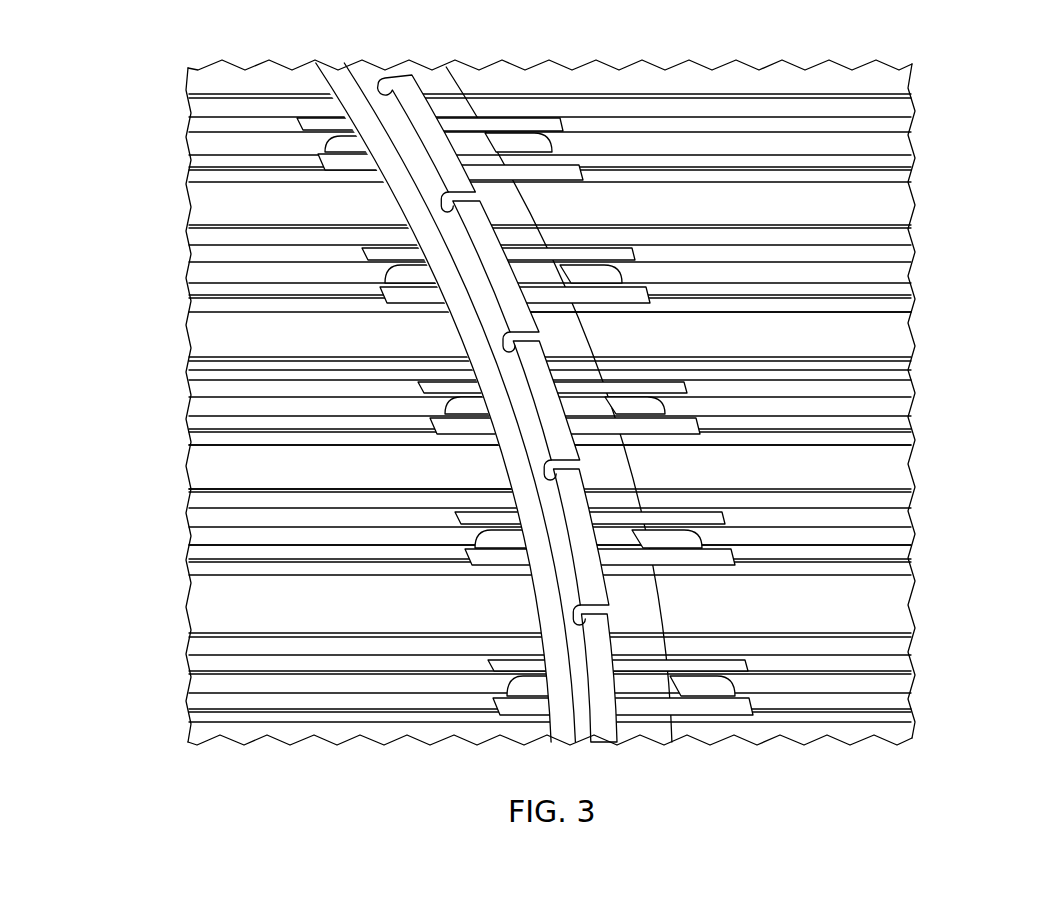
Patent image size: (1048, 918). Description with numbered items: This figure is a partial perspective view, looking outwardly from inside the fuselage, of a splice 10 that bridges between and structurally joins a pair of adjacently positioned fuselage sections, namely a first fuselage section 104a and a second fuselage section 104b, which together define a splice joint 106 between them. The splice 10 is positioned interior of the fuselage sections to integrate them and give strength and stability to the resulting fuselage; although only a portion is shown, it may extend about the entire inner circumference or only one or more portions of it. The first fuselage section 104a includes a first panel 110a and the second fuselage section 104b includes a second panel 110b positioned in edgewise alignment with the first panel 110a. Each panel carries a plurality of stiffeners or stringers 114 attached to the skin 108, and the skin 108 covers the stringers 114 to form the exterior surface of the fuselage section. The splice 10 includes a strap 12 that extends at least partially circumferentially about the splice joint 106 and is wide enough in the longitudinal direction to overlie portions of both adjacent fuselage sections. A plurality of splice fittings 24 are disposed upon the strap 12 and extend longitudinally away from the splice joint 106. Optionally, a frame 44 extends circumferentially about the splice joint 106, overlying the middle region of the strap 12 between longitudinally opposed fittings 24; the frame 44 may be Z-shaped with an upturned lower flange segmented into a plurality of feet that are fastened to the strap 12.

The splice 10 is at (607, 393).
The strap 12 is at (650, 611).
The splice fittings 24 is at (657, 384).
The frame 44 is at (360, 72).
The first fuselage section 104a is at (700, 408).
The second fuselage section 104b is at (330, 408).
The splice joint 106 is at (438, 117).
The skin 108 is at (200, 463).
The first panel 110a is at (899, 335).
The second panel 110b is at (195, 487).
The stringers 114 is at (348, 540).